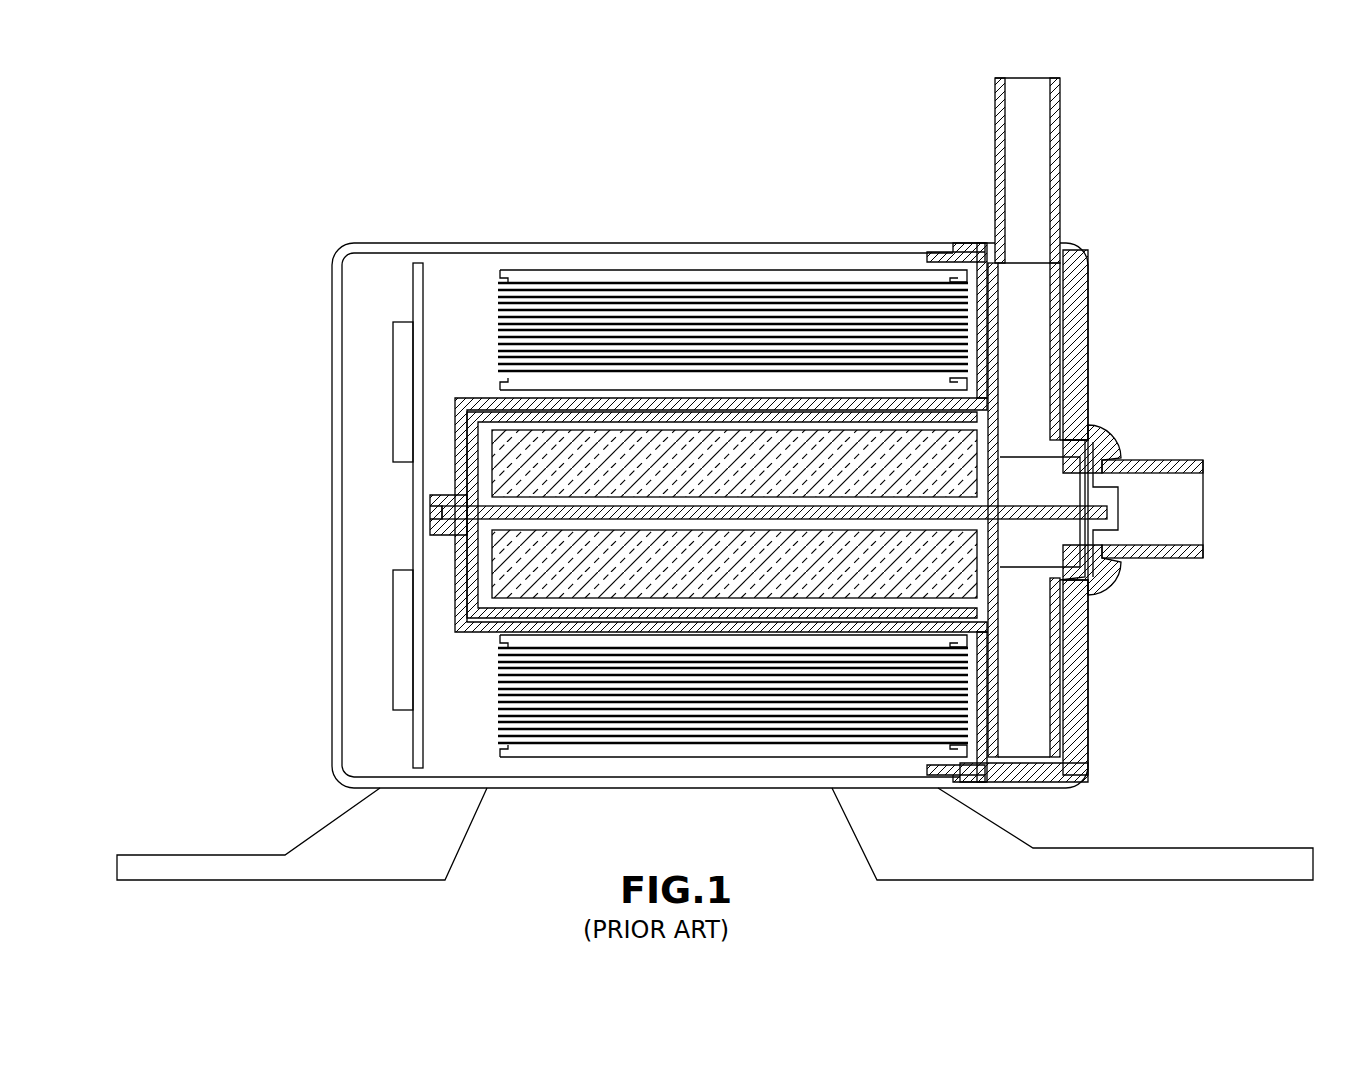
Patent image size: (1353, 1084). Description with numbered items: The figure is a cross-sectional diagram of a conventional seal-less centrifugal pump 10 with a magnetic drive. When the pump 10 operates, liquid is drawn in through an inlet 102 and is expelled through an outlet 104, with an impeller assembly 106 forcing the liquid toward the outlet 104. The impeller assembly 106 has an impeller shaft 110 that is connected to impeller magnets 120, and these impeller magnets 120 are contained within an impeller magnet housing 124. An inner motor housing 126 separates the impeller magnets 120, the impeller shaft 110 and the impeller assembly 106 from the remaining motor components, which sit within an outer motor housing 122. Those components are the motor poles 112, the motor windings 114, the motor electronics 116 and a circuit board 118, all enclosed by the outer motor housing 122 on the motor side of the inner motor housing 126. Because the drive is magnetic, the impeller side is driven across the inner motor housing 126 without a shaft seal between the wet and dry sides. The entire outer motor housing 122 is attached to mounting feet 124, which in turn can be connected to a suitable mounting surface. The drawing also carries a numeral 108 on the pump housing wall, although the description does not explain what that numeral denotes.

The seal-less centrifugal pump 10 is at (1207, 182).
The inlet 102 is at (1190, 512).
The outlet 104 is at (1028, 175).
The impeller assembly 106 is at (1040, 352).
The pump housing 108 is at (1088, 692).
The impeller shaft 110 is at (1025, 508).
The motor poles 112 is at (850, 270).
The motor windings 114 is at (728, 320).
The motor electronics 116 is at (393, 385).
The circuit board 118 is at (417, 740).
The impeller magnets 120 is at (512, 447).
The outer motor housing 122 is at (332, 295).
The mounting feet 124 is at (228, 862).
The inner motor housing 126 is at (455, 437).